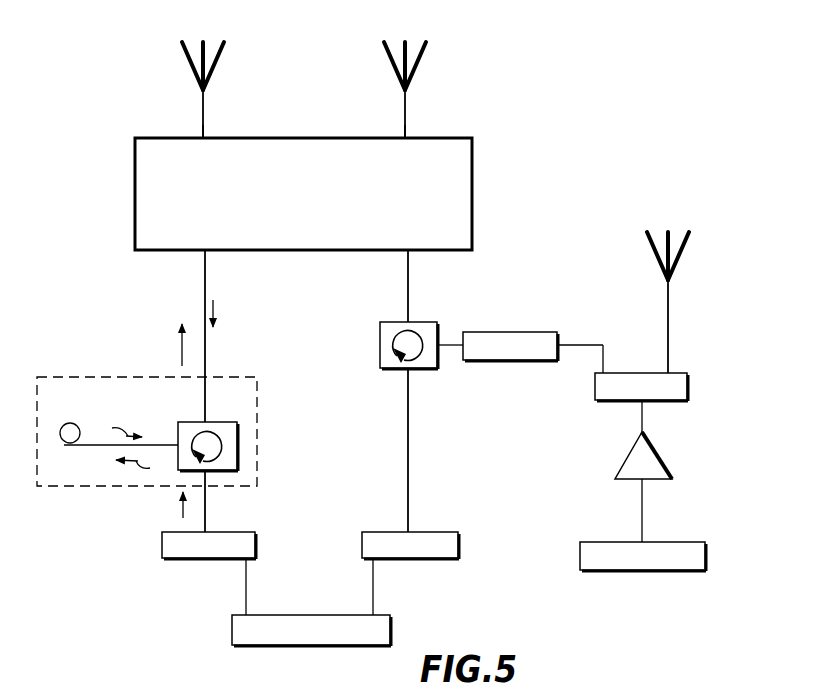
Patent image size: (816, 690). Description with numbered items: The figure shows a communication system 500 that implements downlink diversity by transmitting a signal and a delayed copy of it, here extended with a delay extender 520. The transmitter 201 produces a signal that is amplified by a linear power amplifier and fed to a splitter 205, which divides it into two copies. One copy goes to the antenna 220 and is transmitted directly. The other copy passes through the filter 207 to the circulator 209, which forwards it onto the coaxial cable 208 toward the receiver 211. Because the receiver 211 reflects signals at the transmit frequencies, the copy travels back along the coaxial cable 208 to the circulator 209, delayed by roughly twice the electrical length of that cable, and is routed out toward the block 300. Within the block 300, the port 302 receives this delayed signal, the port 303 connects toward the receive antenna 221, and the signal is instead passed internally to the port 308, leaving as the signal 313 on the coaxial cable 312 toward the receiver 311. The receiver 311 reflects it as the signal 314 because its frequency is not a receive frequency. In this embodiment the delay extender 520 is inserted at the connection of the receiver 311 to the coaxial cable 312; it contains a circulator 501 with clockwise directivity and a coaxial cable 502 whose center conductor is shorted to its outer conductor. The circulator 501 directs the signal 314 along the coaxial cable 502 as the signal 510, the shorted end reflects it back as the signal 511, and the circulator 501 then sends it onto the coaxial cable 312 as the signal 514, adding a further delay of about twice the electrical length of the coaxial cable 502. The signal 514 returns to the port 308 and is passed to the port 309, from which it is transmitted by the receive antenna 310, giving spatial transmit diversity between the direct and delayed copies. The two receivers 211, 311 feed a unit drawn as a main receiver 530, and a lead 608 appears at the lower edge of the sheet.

The receive antenna 310 is at (212, 40).
The receive antenna 221 is at (414, 40).
The port 309 is at (205, 136).
The port 303 is at (407, 136).
The filter/combiner unit 300 is at (472, 182).
The communication system 500 is at (639, 104).
The antenna 220 is at (679, 232).
The port 308 is at (203, 252).
The port 302 is at (406, 252).
The coaxial cable 312 is at (207, 349).
The signal 313 is at (216, 310).
The signal 514 is at (180, 352).
The signal 314 is at (181, 512).
The delay extender 520 is at (92, 376).
The coaxial cable 502 is at (160, 443).
The signal 511 is at (114, 424).
The signal 510 is at (144, 466).
The circulator 501 is at (226, 421).
The circulator 209 is at (419, 322).
The coaxial cable 208 is at (407, 452).
The filter 207 is at (503, 332).
The splitter 205 is at (688, 386).
The transmitter 201 is at (706, 555).
The receiver 311 is at (172, 559).
The receiver 211 is at (447, 559).
The main receiver 530 is at (314, 646).
The lead line 608 is at (140, 689).